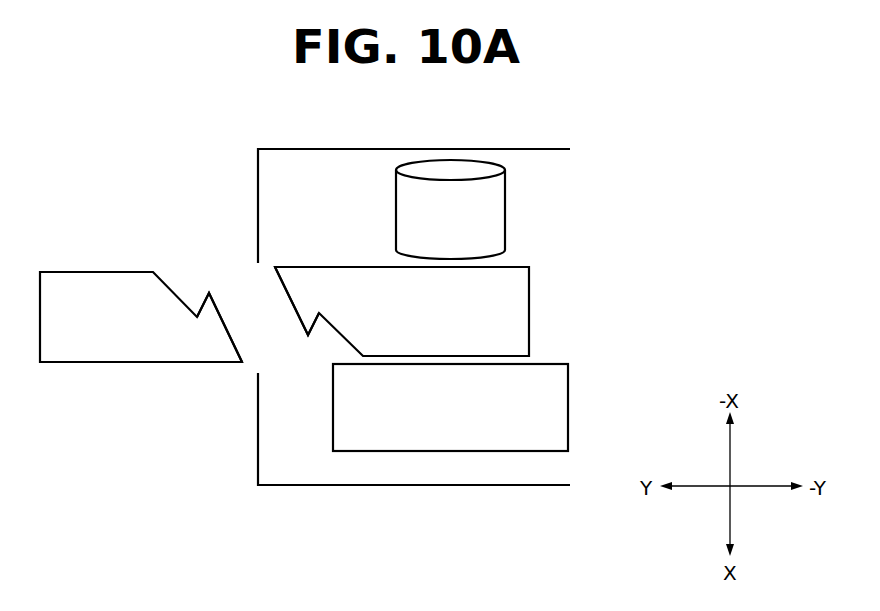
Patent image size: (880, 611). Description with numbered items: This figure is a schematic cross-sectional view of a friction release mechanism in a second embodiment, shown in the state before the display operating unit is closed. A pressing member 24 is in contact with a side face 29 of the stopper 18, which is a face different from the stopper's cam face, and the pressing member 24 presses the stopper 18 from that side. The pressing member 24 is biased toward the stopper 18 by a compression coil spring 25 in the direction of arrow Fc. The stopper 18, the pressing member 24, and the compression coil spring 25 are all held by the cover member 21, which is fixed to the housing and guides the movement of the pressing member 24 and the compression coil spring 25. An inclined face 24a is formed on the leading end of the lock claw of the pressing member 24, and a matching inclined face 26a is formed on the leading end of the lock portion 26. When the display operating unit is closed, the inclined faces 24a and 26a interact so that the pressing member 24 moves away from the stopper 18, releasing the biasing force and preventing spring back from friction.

The cover member 21 is at (363, 149).
The compression coil spring 25 is at (505, 207).
The pressing member 24 is at (335, 267).
The inclined face 24a is at (280, 292).
The lock portion 26 is at (90, 272).
The inclined face 26a is at (233, 335).
The side face 29 is at (549, 364).
The stopper 18 is at (517, 451).